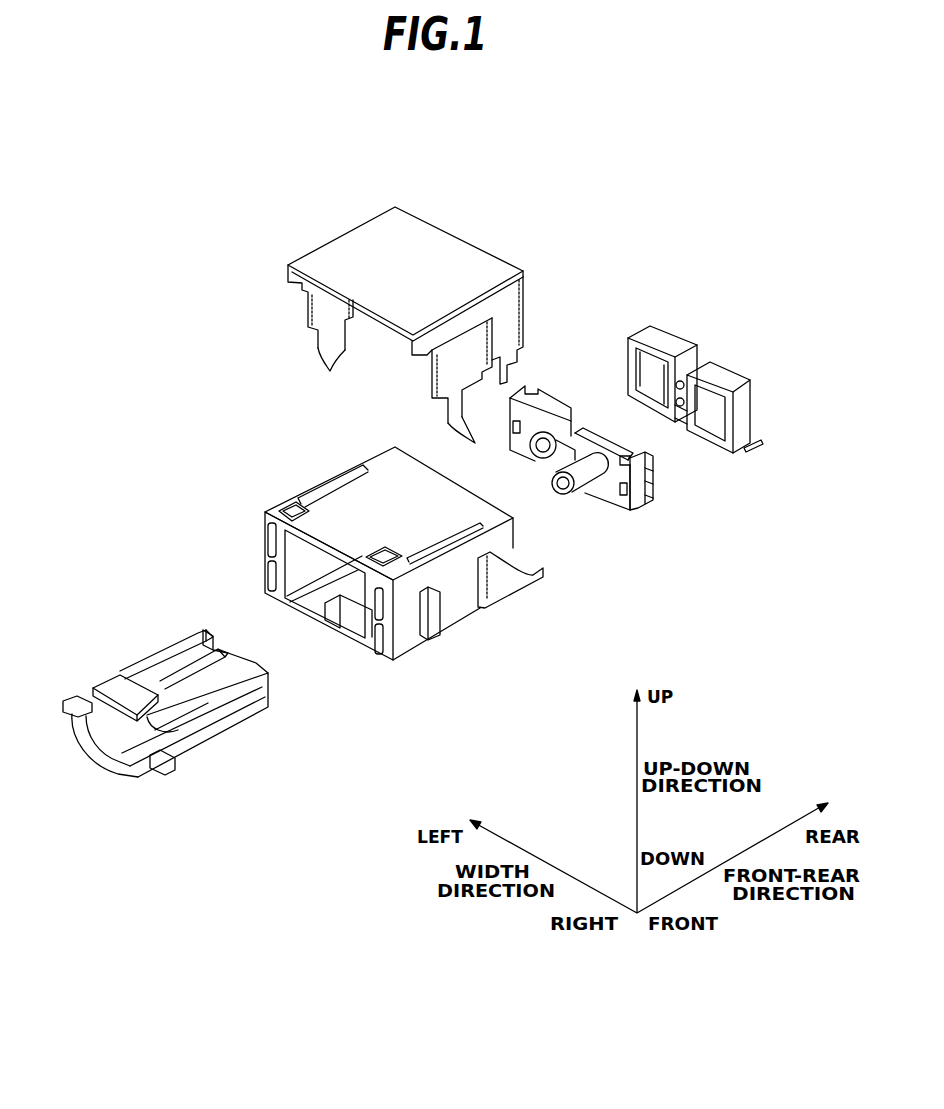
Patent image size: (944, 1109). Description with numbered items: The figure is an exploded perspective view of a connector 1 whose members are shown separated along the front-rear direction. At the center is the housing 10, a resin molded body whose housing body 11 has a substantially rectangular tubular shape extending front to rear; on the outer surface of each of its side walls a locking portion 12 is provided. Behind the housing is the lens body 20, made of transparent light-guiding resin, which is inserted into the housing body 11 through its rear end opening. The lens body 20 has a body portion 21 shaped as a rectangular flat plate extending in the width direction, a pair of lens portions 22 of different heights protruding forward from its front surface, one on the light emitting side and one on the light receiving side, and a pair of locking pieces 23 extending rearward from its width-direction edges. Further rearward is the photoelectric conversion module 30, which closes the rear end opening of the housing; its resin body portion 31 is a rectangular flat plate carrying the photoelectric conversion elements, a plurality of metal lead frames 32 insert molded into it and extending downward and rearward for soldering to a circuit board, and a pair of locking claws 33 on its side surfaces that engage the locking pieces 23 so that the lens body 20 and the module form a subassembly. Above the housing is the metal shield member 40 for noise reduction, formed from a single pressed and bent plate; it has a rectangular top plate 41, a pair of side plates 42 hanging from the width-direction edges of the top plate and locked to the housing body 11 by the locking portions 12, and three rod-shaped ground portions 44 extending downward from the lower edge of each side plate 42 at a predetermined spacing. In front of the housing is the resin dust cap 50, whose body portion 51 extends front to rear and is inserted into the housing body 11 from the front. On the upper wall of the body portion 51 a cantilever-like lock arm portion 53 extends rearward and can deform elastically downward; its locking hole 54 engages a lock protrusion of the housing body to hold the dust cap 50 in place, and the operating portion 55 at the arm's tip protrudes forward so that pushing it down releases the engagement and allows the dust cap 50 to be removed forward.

The connector 1 is at (622, 214).
The housing 10 is at (395, 665).
The housing body 11 is at (382, 490).
The locking portion 12 is at (497, 598).
The lens body 20 is at (640, 520).
The body portion 21 is at (556, 422).
The lens portions 22 is at (543, 458).
The locking pieces 23 is at (538, 396).
The photoelectric conversion module 30 is at (743, 460).
The body portion 31 is at (652, 332).
The lead frames 32 is at (755, 446).
The locking claws 33 is at (744, 419).
The shield member 40 is at (403, 178).
The top plate 41 is at (430, 243).
The side plates 42 is at (308, 303).
The ground portions 44 is at (406, 408).
The dust cap 50 is at (120, 632).
The body portion 51 is at (204, 737).
The lock arm portion 53 is at (137, 665).
The locking hole 54 is at (165, 660).
The operating portion 55 is at (118, 690).